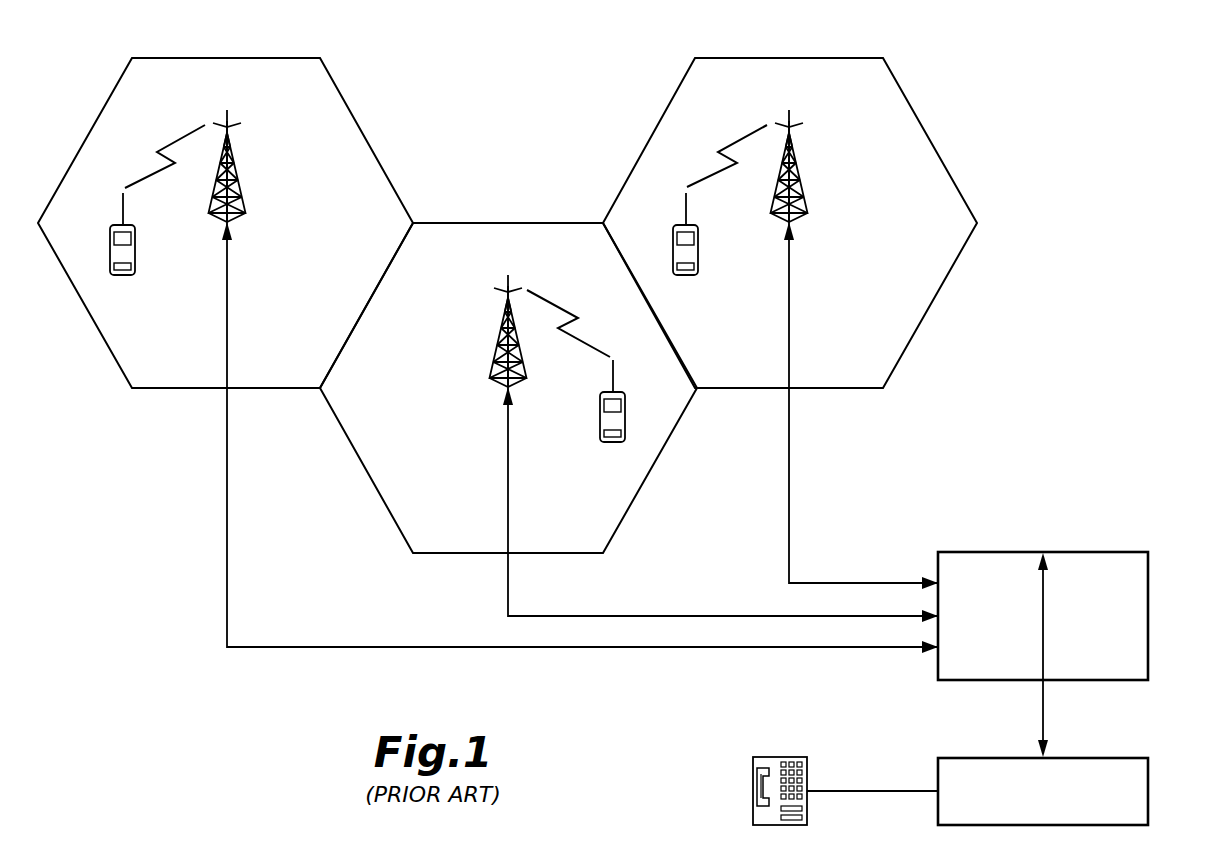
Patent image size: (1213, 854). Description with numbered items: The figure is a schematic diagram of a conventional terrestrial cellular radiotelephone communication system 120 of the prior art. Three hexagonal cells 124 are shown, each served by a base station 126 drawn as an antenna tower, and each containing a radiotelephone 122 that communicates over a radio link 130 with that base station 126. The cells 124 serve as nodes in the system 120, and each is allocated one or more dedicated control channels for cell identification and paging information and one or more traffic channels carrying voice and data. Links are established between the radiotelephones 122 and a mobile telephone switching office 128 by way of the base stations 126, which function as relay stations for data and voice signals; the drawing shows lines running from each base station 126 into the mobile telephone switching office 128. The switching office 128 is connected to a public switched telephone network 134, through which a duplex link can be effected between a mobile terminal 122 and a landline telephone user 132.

The terrestrial cellular radiotelephone communication system 120 is at (1054, 114).
The radiotelephone 122 is at (135, 258).
The cell 124 is at (110, 350).
The base station 126 is at (250, 179).
The mobile telephone switching office 128 is at (1097, 550).
The radio link 130 is at (166, 139).
The landline telephone user 132 is at (782, 757).
The public switched telephone network 134 is at (1097, 757).